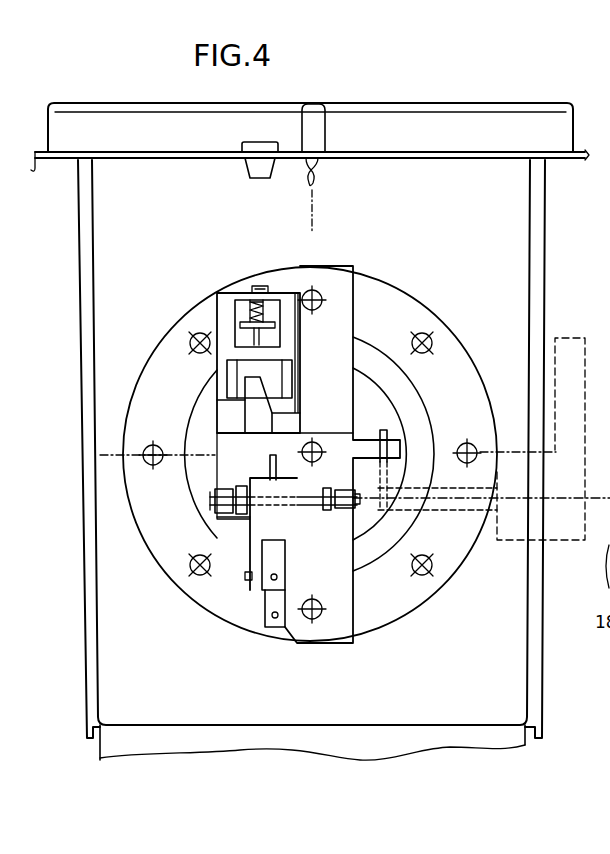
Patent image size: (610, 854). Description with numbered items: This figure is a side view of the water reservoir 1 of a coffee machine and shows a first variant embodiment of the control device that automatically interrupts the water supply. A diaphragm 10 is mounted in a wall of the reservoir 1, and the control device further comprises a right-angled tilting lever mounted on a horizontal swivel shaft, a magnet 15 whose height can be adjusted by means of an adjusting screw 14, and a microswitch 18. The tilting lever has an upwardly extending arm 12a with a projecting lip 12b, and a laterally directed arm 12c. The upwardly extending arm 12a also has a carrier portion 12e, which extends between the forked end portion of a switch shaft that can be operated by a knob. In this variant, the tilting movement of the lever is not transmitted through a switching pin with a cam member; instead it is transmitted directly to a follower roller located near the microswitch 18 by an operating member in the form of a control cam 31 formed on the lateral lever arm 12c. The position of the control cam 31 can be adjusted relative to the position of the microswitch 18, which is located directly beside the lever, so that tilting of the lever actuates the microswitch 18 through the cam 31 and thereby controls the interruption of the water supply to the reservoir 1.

The reservoir 1 is at (498, 213).
The diaphragm 10 is at (372, 358).
The upwardly extending arm 12a is at (245, 440).
The projecting lip 12b is at (250, 395).
The laterally directed arm 12c is at (316, 508).
The carrier portion 12e is at (392, 440).
The adjusting screw 14 is at (258, 287).
The magnet 15 is at (250, 370).
The microswitch 18 is at (260, 576).
The control cam 31 is at (268, 466).